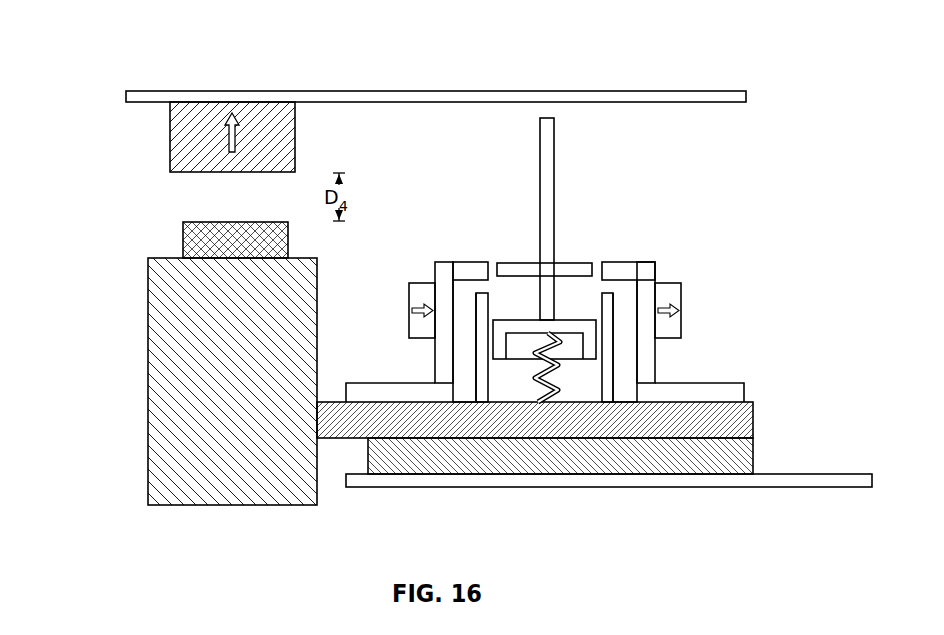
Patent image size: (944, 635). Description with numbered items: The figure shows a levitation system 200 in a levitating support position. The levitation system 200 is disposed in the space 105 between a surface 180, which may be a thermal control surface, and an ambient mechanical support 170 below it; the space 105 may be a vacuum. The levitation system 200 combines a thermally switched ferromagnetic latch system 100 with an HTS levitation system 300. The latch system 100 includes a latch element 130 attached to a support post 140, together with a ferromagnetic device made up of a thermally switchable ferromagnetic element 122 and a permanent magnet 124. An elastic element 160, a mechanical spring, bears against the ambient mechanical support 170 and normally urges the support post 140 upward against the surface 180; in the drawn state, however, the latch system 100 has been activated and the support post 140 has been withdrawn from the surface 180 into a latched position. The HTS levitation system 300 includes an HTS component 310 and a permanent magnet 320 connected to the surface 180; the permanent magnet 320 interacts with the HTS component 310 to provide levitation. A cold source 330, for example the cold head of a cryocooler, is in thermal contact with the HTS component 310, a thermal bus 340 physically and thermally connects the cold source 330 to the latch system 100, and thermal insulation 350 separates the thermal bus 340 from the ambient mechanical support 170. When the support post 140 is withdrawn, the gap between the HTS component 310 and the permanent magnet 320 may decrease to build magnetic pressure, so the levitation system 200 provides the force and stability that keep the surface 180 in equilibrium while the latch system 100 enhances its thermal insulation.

The latch system 100 is at (738, 188).
The space 105 is at (846, 322).
The thermally switchable ferromagnetic element 122 is at (655, 272).
The permanent magnet 124 is at (681, 308).
The latch element 130 is at (518, 263).
The support post 140 is at (554, 183).
The elastic element 160 is at (548, 398).
The ambient mechanical support 170 is at (608, 487).
The surface 180 is at (323, 91).
The levitation system 200 is at (121, 50).
The HTS levitation system 300 is at (110, 188).
The HTS component 310 is at (183, 240).
The permanent magnet 320 is at (170, 135).
The cold source 330 is at (148, 382).
The thermal bus 340 is at (347, 438).
The thermal insulation 350 is at (462, 455).